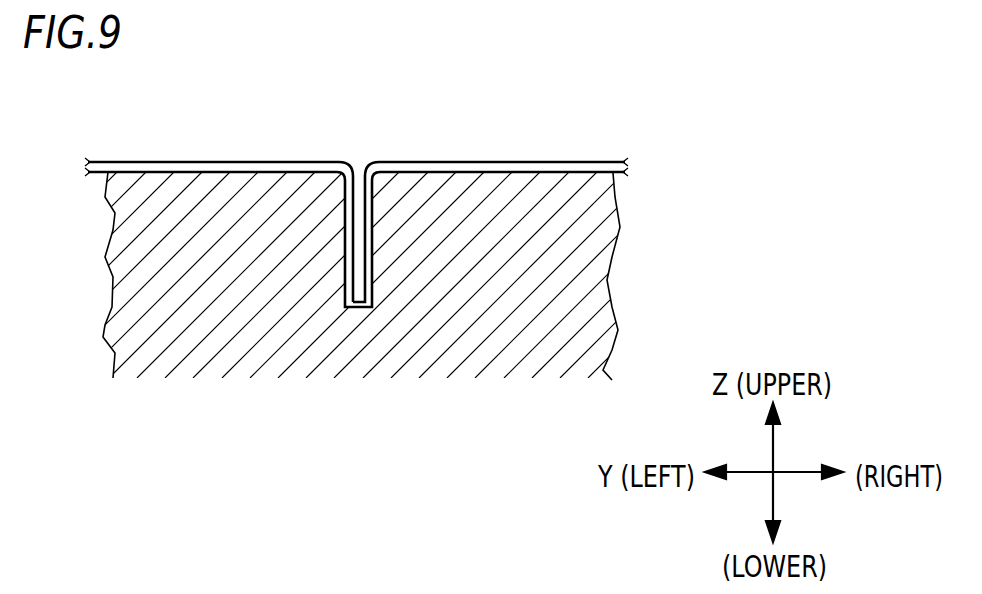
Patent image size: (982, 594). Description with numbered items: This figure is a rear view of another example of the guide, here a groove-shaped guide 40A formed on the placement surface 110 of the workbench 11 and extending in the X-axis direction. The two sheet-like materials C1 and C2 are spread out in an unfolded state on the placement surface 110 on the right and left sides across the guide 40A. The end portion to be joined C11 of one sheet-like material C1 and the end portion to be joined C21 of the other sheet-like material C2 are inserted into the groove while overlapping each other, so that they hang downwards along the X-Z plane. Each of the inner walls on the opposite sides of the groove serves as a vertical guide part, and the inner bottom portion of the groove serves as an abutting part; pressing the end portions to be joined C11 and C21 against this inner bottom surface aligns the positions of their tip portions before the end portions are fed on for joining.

The workbench 11 is at (143, 273).
The placement surface 110 is at (327, 269).
The guide 40A is at (352, 296).
The sheet-like material C1 is at (228, 160).
The sheet-like material C2 is at (552, 163).
The end portion to be joined C11 is at (352, 230).
The end portion to be joined C21 is at (363, 293).